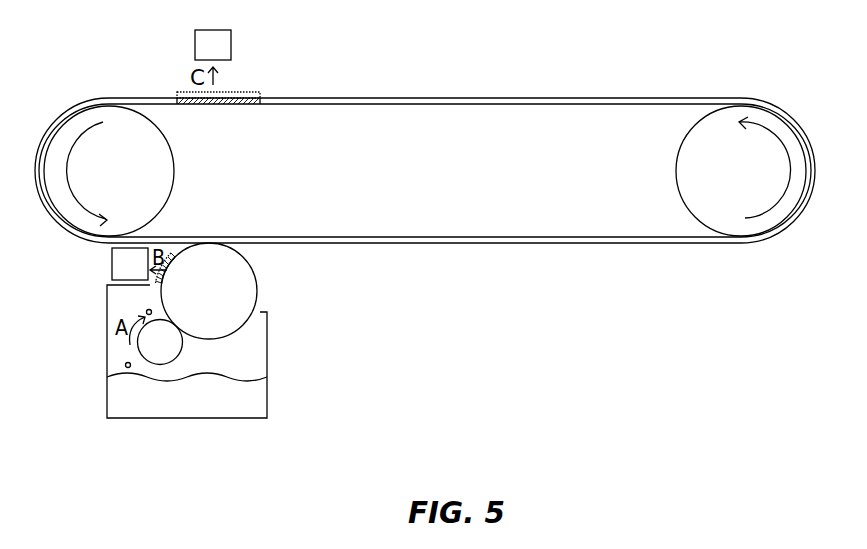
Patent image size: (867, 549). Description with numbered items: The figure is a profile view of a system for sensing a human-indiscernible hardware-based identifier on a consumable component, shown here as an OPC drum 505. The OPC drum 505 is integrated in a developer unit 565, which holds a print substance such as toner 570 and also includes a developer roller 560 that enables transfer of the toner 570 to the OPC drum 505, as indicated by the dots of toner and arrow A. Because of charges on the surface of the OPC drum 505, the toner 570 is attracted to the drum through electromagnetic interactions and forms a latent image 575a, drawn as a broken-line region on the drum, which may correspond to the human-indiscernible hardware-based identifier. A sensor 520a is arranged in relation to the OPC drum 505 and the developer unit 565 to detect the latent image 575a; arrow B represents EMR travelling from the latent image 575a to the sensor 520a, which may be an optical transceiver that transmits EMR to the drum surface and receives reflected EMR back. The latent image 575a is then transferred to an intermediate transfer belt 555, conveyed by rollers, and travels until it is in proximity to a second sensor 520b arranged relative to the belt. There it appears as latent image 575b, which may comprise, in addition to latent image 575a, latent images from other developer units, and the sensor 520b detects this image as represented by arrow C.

The OPC drum 505 is at (228, 301).
The sensor 520a is at (110, 262).
The second sensor 520b is at (193, 52).
The intermediate transfer belt 555 is at (478, 253).
The developer roller 560 is at (183, 351).
The developer unit 565 is at (267, 377).
The toner 570 is at (205, 413).
The latent image 575a is at (173, 257).
The latent image 575b is at (257, 93).